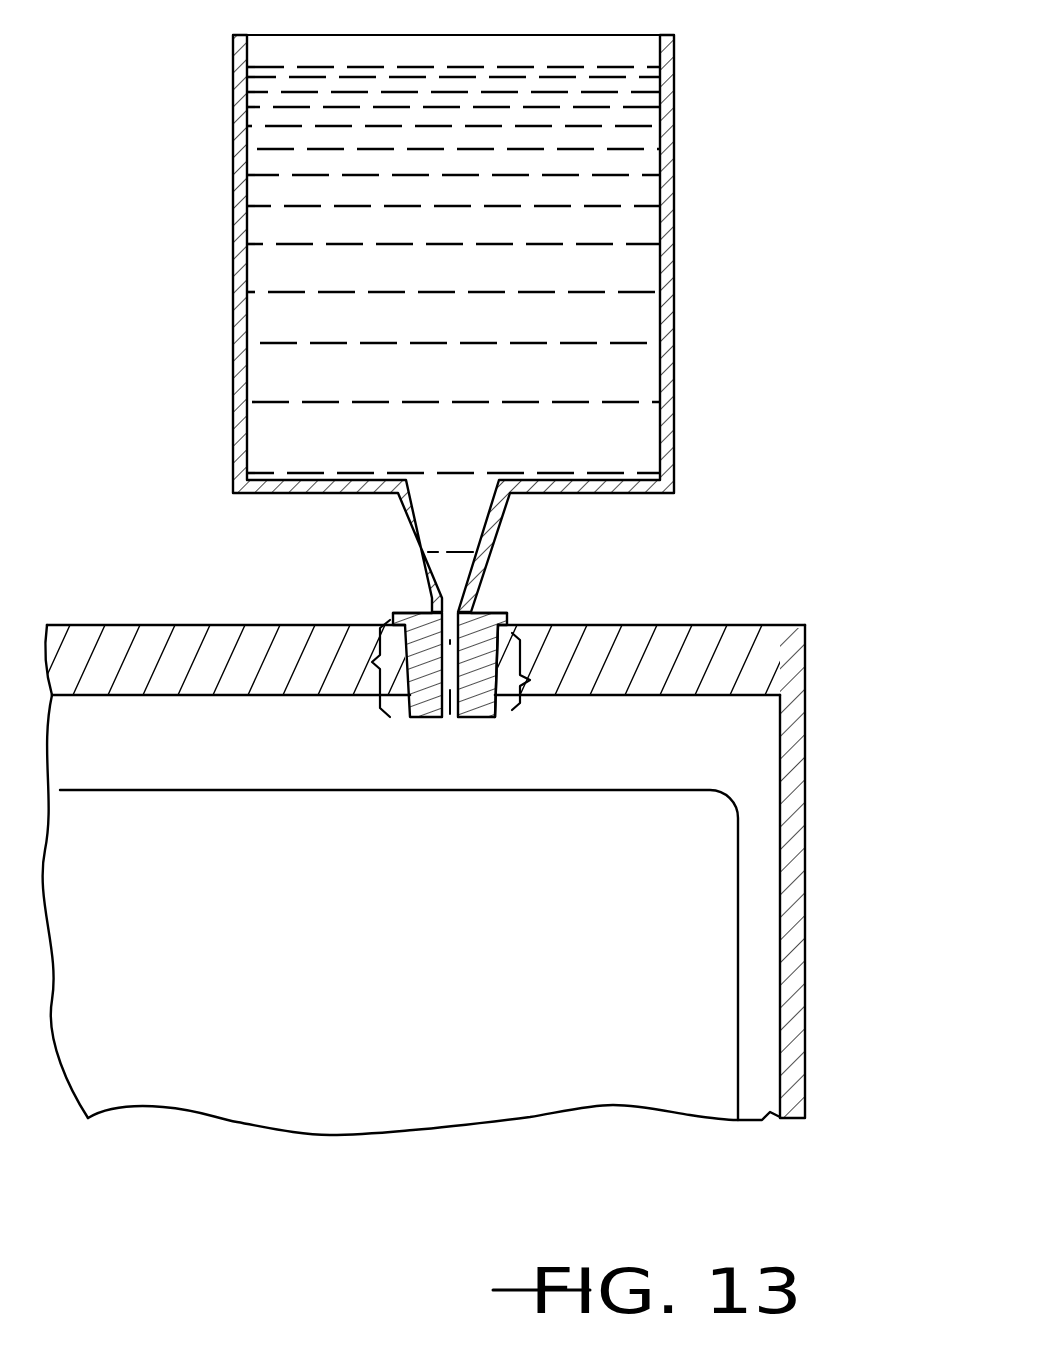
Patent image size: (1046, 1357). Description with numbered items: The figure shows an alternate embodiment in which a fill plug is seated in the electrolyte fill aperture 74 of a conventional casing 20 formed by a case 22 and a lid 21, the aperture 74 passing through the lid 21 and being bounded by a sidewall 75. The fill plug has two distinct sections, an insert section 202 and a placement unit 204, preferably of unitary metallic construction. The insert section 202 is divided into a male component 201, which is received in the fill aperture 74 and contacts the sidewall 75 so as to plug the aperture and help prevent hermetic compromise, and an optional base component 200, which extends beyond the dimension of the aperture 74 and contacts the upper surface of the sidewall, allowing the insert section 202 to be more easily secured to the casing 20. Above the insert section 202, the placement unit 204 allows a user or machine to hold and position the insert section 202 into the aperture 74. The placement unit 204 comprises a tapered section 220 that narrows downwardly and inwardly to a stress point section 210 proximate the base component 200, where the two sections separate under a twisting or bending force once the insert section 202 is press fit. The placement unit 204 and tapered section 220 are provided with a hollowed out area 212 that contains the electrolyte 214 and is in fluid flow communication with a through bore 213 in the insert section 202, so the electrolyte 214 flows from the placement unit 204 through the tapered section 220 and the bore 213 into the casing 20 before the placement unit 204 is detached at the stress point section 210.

The casing 20 is at (812, 666).
The lid 21 is at (162, 623).
The case 22 is at (805, 812).
The electrolyte fill aperture 74 is at (503, 672).
The sidewall of the aperture 75 is at (513, 620).
The base component 200 is at (400, 612).
The male component 201 is at (530, 680).
The insert section 202 is at (375, 662).
The placement unit 204 is at (439, 327).
The stress point section 210 is at (433, 612).
The hollowed out area 212 is at (367, 370).
The through bore 213 is at (452, 717).
The electrolyte 214 is at (445, 188).
The tapered section 220 is at (518, 500).